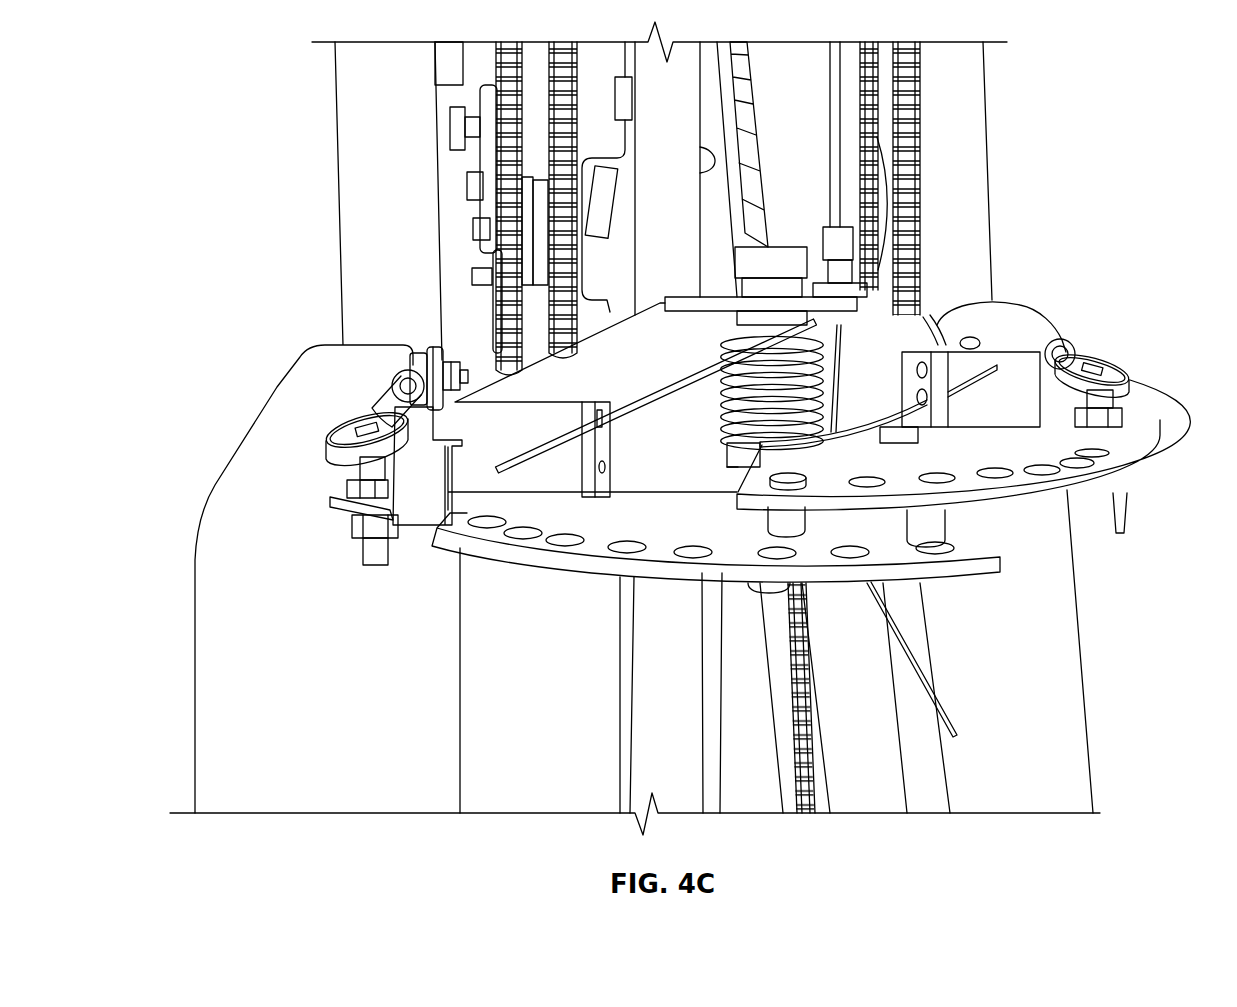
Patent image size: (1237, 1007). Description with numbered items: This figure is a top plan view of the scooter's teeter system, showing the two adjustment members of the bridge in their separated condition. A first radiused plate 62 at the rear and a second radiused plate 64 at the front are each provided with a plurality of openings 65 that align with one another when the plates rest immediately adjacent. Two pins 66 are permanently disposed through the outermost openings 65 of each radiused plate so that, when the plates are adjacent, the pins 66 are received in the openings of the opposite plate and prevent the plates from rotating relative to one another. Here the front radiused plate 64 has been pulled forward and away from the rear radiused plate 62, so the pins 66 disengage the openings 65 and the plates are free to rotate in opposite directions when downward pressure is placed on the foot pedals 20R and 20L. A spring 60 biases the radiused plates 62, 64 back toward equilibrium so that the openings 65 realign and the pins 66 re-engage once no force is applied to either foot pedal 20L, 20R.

The left foot pedal 20L is at (210, 697).
The right foot pedal 20R is at (1067, 693).
The spring 60 is at (740, 390).
The first radiused plate 62 is at (550, 570).
The second radiused plate 64 is at (1130, 463).
The openings 65 is at (622, 545).
The pins 66 is at (788, 473).